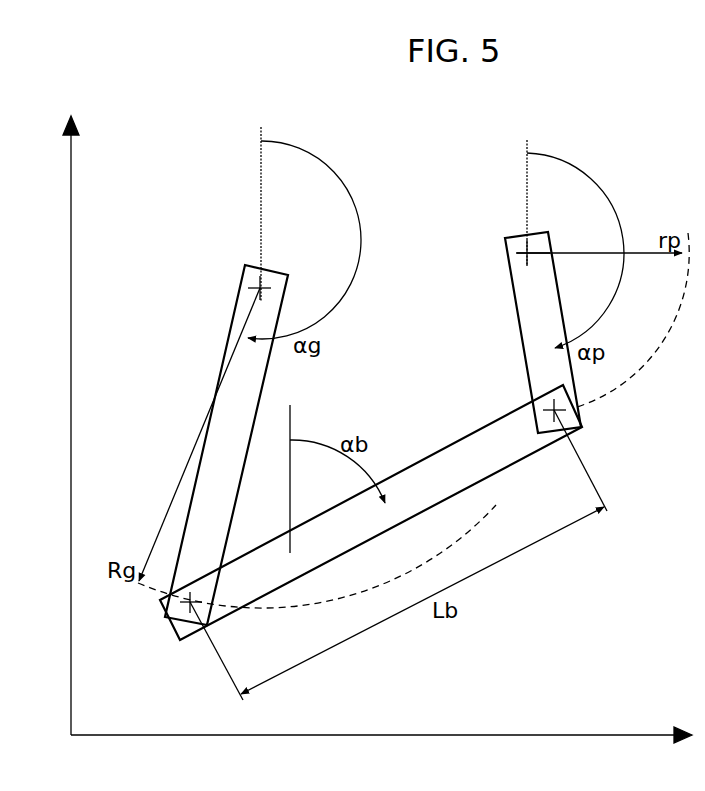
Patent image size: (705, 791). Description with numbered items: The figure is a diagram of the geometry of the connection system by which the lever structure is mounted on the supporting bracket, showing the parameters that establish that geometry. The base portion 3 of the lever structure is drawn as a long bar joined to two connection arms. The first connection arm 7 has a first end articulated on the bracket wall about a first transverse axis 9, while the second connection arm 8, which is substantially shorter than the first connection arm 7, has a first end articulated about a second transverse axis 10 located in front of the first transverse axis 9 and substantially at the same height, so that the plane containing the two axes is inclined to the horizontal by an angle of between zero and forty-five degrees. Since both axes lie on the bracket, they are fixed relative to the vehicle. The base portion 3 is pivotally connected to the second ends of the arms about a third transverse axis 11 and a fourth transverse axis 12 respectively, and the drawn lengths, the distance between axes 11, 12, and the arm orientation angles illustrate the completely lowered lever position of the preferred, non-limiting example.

The base portion 3 is at (450, 436).
The first connection arm 7 is at (222, 349).
The second connection arm 8 is at (509, 316).
The first transverse axis 9 is at (258, 287).
The second transverse axis 10 is at (522, 250).
The third transverse axis 11 is at (186, 606).
The fourth transverse axis 12 is at (558, 414).